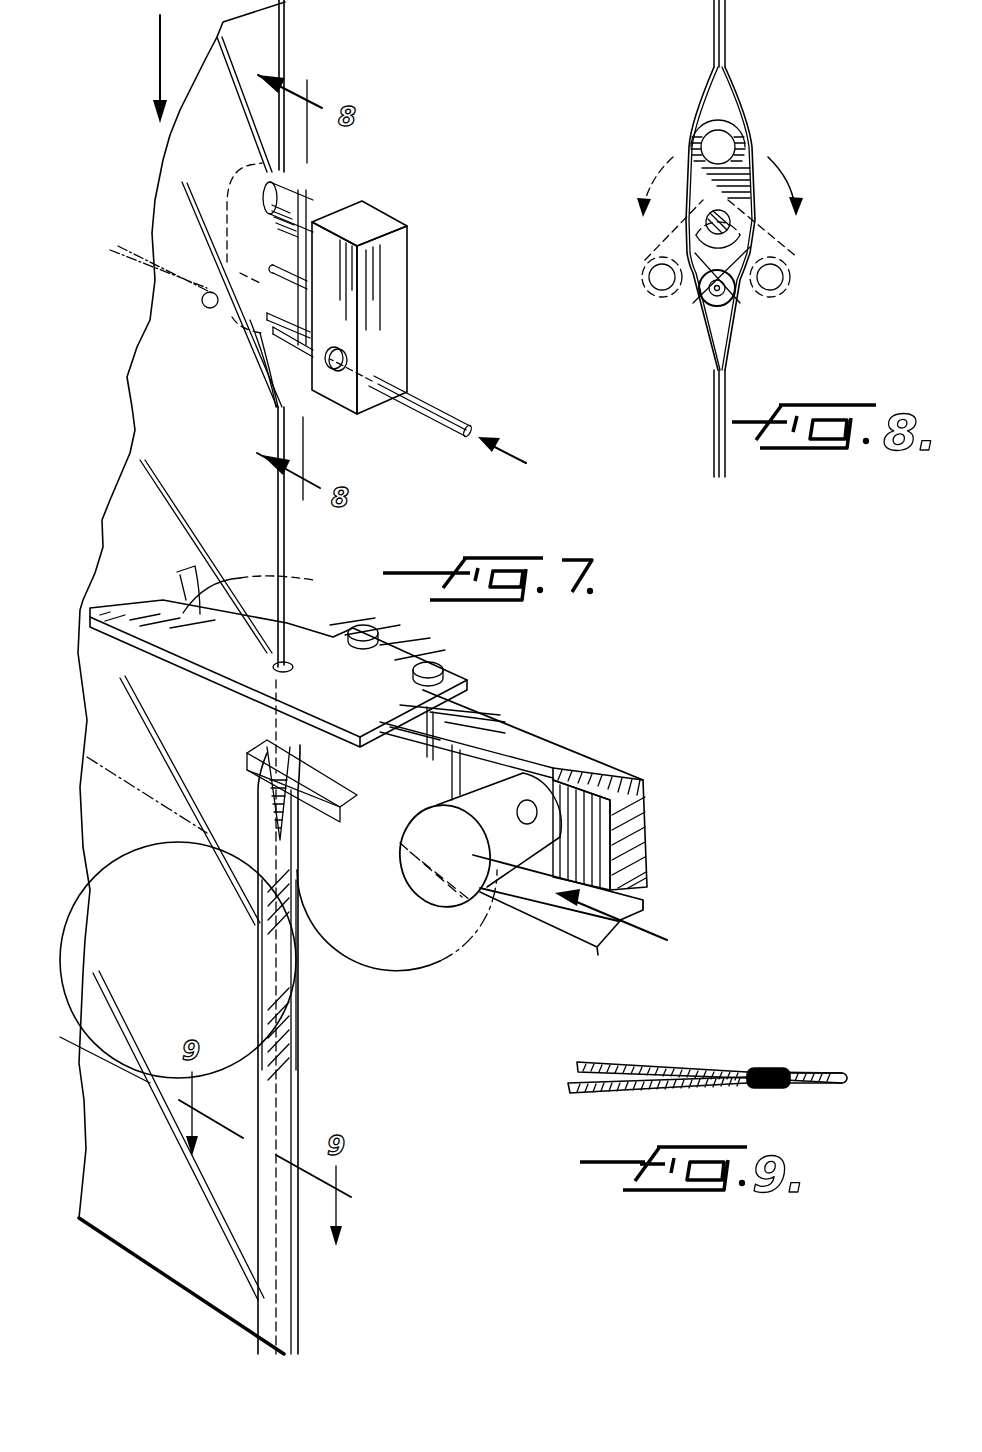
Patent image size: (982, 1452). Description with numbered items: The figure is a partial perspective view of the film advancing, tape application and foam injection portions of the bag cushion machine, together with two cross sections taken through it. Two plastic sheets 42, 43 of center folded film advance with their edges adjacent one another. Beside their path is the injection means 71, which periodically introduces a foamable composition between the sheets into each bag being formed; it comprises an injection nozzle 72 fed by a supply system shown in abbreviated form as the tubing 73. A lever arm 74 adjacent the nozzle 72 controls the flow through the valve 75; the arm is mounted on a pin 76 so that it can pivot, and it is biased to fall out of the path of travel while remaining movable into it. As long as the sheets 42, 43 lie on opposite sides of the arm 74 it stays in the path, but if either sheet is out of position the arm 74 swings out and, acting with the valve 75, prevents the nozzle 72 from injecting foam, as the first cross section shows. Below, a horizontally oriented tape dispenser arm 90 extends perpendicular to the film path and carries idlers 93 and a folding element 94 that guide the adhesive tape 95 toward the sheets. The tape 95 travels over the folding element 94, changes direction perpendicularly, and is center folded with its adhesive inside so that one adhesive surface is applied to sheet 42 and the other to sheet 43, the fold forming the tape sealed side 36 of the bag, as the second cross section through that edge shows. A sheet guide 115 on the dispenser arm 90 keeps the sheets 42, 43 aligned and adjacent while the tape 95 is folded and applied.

In FIG. 7, the tape sealed side 36 is at (280, 1063).
In FIG. 9, the tape sealed side 36 is at (797, 1068).
In FIG. 7, the plastic sheet 42 is at (260, 160).
In FIG. 8, the plastic sheet 42 is at (707, 97).
In FIG. 9, the plastic sheet 42 is at (607, 1092).
In FIG. 7, the plastic sheet 43 is at (297, 173).
In FIG. 8, the plastic sheet 43 is at (737, 97).
In FIG. 9, the plastic sheet 43 is at (612, 1062).
In FIG. 7, the injection means 71 is at (316, 311).
In FIG. 7, the injection nozzle 72 is at (280, 360).
In FIG. 8, the injection nozzle 72 is at (720, 307).
In FIG. 7, the tubing 73 is at (444, 403).
In FIG. 7, the lever arm 74 is at (227, 207).
In FIG. 8, the lever arm 74 is at (747, 163).
In FIG. 7, the valve 75 is at (397, 270).
In FIG. 7, the pin 76 is at (287, 293).
In FIG. 8, the pin 76 is at (728, 222).
In FIG. 7, the tape dispenser arm 90 is at (558, 750).
In FIG. 7, the idlers 93 is at (515, 870).
In FIG. 7, the folding element 94 is at (277, 743).
In FIG. 7, the adhesive tape 95 is at (618, 903).
In FIG. 9, the adhesive tape 95 is at (818, 1086).
In FIG. 7, the sheet guide 115 is at (297, 577).